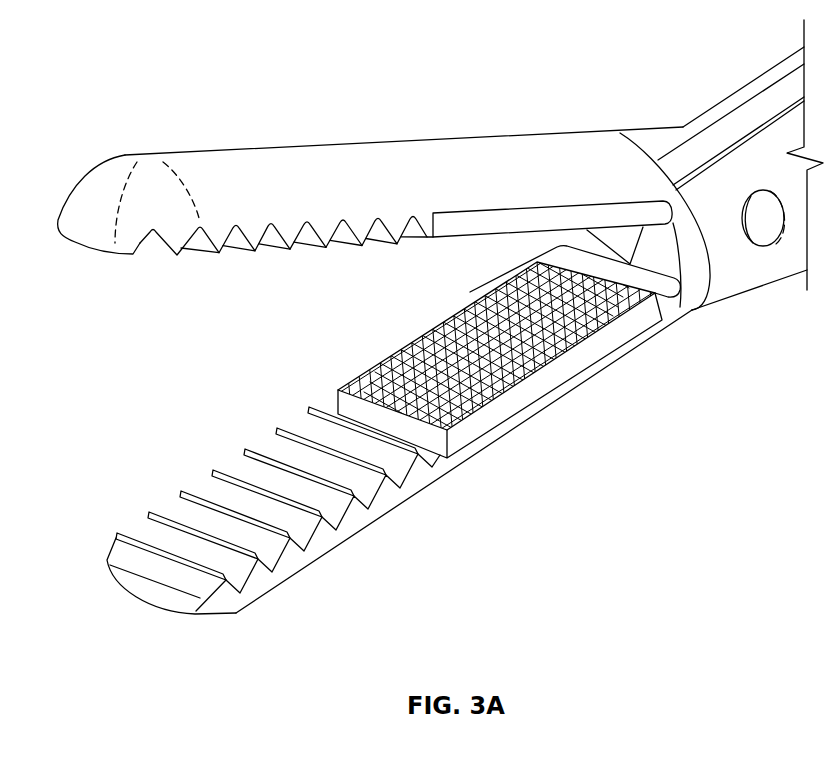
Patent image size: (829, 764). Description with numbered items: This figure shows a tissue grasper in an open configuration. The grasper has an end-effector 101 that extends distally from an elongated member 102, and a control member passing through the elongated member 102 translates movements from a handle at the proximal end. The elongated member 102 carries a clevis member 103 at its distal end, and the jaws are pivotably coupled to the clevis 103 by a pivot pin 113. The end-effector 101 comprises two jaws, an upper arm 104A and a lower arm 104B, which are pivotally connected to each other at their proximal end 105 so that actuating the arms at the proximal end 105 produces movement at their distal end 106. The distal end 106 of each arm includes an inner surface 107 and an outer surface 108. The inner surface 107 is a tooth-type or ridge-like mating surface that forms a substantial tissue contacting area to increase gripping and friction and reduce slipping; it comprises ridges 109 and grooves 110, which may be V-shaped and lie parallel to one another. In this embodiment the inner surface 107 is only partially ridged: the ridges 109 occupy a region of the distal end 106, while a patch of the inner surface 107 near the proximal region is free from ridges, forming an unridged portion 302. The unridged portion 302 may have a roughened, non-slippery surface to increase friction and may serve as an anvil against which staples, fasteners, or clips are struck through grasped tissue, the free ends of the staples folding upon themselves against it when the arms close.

The end-effector 101 is at (476, 86).
The elongated member 102 is at (773, 163).
The clevis member 103 is at (727, 268).
The upper arm 104A is at (367, 160).
The lower arm 104B is at (360, 520).
The proximal end 105 is at (787, 83).
The distal end 106 is at (107, 185).
The inner surface 107 is at (240, 242).
The outer surface 108 is at (450, 472).
The ridges 109 is at (190, 612).
The grooves 110 is at (287, 567).
The pivot pin 113 is at (762, 242).
The unridged portion 302 is at (540, 367).